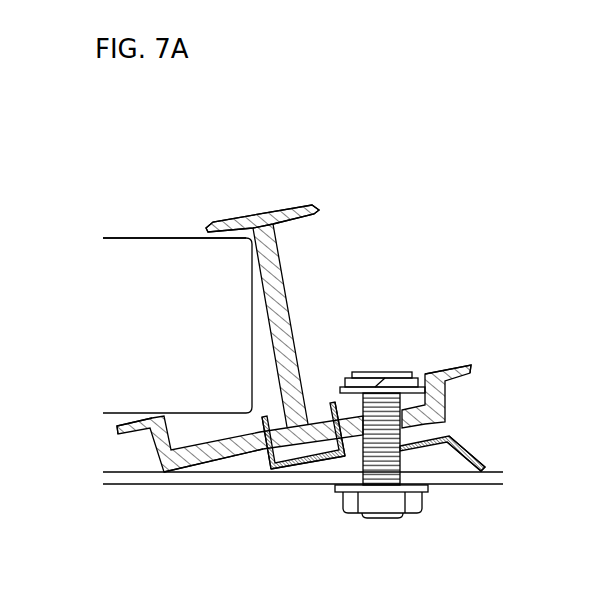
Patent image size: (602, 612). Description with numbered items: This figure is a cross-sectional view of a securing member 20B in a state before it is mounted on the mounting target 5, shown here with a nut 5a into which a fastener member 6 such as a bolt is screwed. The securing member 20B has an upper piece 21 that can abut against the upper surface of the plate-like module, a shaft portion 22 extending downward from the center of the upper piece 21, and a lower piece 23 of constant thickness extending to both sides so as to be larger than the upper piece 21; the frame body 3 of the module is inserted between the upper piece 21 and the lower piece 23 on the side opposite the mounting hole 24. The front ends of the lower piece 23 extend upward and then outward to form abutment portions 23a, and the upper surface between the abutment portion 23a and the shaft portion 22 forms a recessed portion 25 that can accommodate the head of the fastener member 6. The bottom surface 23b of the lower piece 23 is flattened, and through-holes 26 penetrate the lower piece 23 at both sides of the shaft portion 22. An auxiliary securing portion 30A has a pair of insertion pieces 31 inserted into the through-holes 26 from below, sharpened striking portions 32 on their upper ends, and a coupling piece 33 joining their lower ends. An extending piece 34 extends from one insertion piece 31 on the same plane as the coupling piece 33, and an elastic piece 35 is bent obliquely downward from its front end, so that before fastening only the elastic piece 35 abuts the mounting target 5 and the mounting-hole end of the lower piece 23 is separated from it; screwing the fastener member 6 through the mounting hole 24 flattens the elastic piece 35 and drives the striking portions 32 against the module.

The frame body 3 is at (135, 242).
The mounting target 5 is at (123, 471).
The nut 5a is at (412, 507).
The fastener member 6 is at (373, 381).
The securing member 20B is at (332, 200).
The upper piece 21 is at (292, 207).
The shaft portion 22 is at (272, 259).
The lower piece 23 is at (188, 452).
The abutment portion 23a is at (131, 428).
The bottom surface 23b is at (200, 465).
The mounting hole 24 is at (410, 411).
The recessed portion 25 is at (417, 390).
The through-holes 26 is at (257, 455).
The auxiliary securing portion 30A is at (287, 469).
The insertion pieces 31 is at (261, 462).
The striking portions 32 is at (262, 417).
The coupling piece 33 is at (318, 467).
The extending piece 34 is at (430, 447).
The elastic piece 35 is at (468, 449).